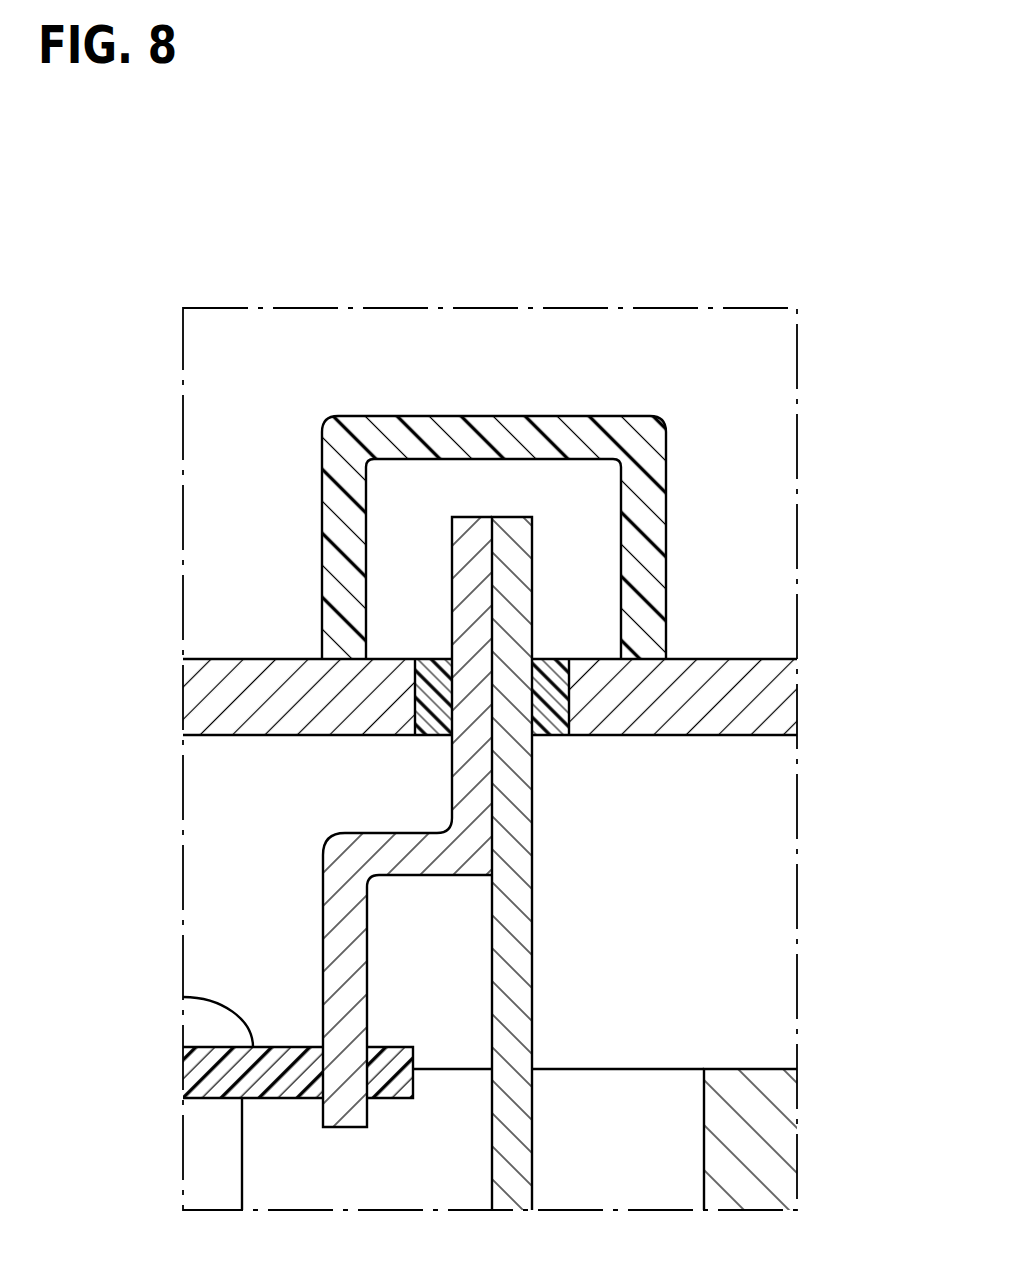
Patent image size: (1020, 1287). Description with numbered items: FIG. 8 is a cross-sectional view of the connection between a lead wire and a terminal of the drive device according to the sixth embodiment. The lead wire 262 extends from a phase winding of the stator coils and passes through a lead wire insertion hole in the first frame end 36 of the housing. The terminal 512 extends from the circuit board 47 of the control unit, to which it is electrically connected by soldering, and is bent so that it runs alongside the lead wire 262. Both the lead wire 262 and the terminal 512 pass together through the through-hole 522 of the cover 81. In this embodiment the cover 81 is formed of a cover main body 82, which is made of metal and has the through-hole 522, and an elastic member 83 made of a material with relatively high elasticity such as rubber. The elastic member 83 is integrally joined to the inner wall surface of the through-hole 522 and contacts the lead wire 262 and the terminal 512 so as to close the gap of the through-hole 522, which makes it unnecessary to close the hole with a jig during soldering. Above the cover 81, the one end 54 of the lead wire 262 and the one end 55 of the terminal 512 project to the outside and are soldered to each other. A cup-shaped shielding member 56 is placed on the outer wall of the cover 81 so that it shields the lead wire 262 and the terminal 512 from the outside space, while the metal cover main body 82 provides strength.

The first frame end 36 is at (788, 1097).
The circuit board 47 is at (215, 1090).
The one end of lead wire 54 is at (513, 517).
The one end of terminal 55 is at (472, 517).
The shielding member 56 is at (333, 500).
The cover 81 is at (546, 692).
The cover main body 82 is at (788, 706).
The elastic member 83 is at (646, 692).
The lead wire 262 is at (515, 962).
The terminal 512 is at (343, 962).
The through-hole 522 is at (553, 660).